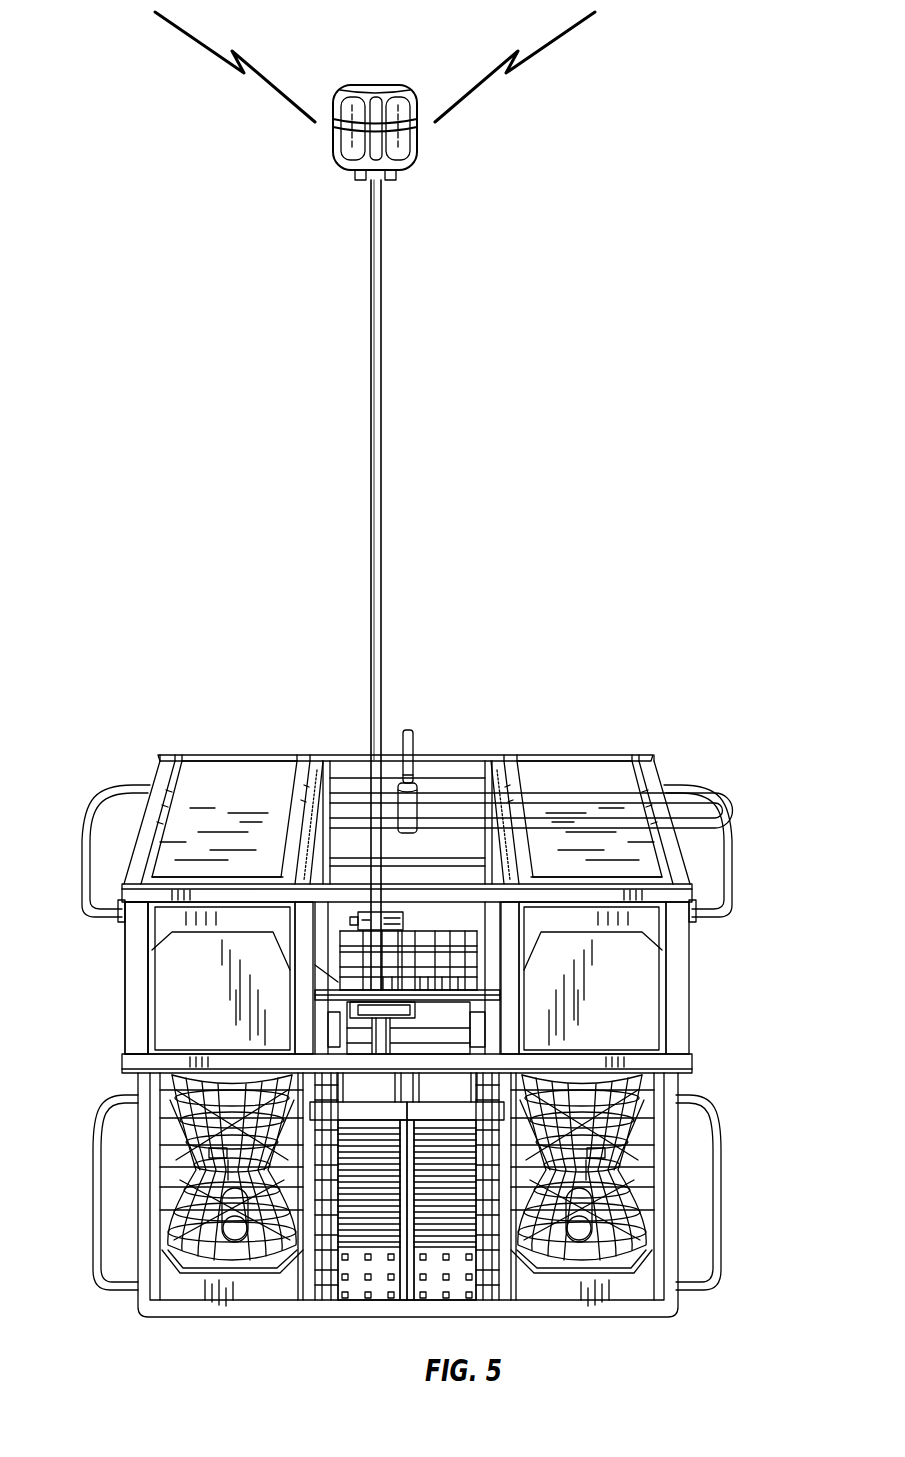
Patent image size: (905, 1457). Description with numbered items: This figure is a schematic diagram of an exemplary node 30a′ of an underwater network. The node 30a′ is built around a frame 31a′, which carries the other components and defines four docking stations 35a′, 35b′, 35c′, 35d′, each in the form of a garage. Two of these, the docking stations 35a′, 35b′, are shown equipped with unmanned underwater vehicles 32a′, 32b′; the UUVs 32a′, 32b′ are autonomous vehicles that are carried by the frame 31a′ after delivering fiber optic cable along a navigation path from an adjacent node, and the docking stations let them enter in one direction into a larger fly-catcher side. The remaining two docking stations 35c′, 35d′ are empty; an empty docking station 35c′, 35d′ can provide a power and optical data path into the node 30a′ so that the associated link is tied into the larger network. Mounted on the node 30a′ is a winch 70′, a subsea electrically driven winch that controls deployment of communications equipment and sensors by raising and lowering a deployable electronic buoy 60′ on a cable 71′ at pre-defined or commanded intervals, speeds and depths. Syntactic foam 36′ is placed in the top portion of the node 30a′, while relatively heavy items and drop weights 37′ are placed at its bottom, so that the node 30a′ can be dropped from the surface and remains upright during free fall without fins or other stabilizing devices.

The deployable electronic buoy 60′ is at (322, 154).
The cable 71′ is at (372, 423).
The node 30a′ is at (228, 678).
The syntactic foam 36′ is at (219, 774).
The winch 70′ is at (403, 918).
The frame 31a′ is at (141, 972).
The empty docking station 35d′ is at (185, 1130).
The empty docking station 35c′ is at (632, 1137).
The docking station 35b′ is at (197, 1263).
The docking station 35a′ is at (552, 1263).
The unmanned underwater vehicle 32b′ is at (237, 1232).
The unmanned underwater vehicle 32a′ is at (580, 1232).
The drop weights 37′ is at (437, 1290).